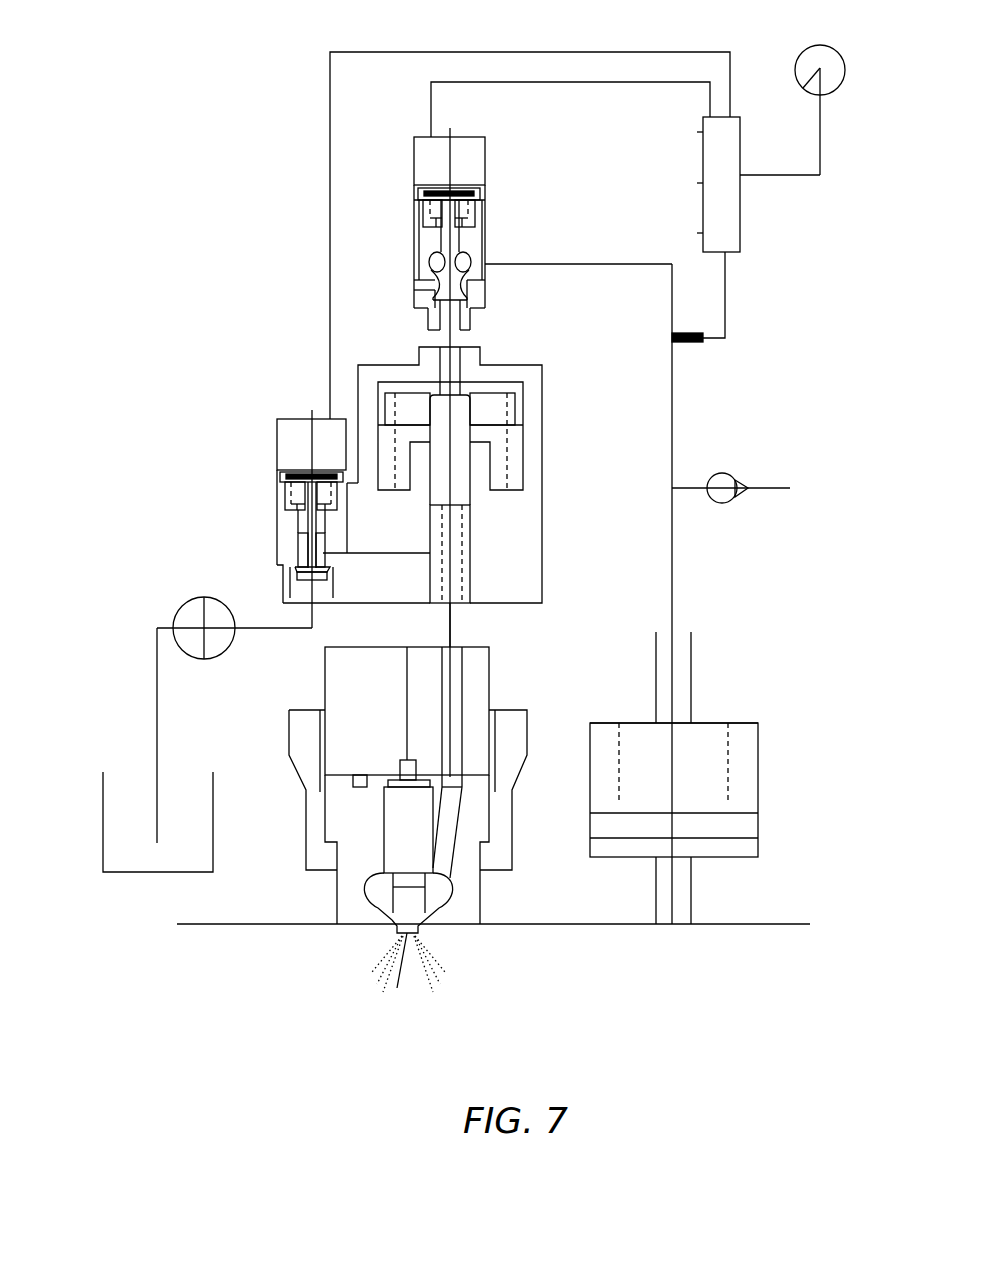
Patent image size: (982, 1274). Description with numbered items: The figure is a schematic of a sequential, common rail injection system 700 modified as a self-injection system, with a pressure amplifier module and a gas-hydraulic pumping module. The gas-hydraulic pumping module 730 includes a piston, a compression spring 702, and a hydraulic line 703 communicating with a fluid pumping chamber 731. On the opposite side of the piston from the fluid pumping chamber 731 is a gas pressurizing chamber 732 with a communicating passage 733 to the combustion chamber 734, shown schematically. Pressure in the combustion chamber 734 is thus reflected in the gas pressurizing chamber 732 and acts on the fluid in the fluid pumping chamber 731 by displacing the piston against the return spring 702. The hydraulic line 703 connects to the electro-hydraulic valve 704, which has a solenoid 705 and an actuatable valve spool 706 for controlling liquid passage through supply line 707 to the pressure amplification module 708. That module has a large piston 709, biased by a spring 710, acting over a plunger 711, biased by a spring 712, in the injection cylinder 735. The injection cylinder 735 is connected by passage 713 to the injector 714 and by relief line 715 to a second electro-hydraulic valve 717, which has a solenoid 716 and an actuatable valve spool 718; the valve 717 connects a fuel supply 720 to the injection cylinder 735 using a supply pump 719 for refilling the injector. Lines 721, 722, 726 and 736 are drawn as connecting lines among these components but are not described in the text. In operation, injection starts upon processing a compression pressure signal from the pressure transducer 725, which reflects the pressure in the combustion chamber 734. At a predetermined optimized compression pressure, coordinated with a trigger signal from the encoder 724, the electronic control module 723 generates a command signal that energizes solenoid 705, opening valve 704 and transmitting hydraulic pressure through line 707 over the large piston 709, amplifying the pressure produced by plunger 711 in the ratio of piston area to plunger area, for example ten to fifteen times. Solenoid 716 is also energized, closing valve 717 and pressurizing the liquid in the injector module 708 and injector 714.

The sequential common rail injection system 700 is at (503, 522).
The compression spring 702 is at (732, 770).
The hydraulic line 703 is at (634, 594).
The electro-hydraulic valve 704 is at (633, 519).
The solenoid 705 is at (493, 166).
The actuatable valve spool 706 is at (407, 250).
The supply line 707 is at (501, 318).
The pressure amplification module 708 is at (495, 473).
The large piston 709 is at (511, 438).
The spring 710 is at (508, 457).
The plunger 711 is at (524, 442).
The spring 712 is at (526, 554).
The passage 713 is at (504, 695).
The injector 714 is at (438, 819).
The relief line 715 is at (356, 595).
The solenoid 716 is at (263, 443).
The electro-hydraulic valve 717 is at (261, 536).
The actuatable valve spool 718 is at (266, 519).
The supply pump 719 is at (166, 616).
The fuel supply 720 is at (197, 822).
The first fluid line 721 is at (530, 210).
The second fluid line 722 is at (570, 109).
The electronic control module 723 is at (765, 227).
The encoder 724 is at (824, 94).
The pressure transducer 725 is at (737, 418).
The outlet line 726 is at (759, 472).
The gas-hydraulic pumping module 730 is at (694, 695).
The fluid pumping chamber 731 is at (720, 788).
The gas pressurizing chamber 732 is at (730, 864).
The communicating passage 733 is at (725, 778).
The combustion chamber 734 is at (699, 979).
The injection cylinder 735 is at (532, 558).
The return line 736 is at (234, 735).